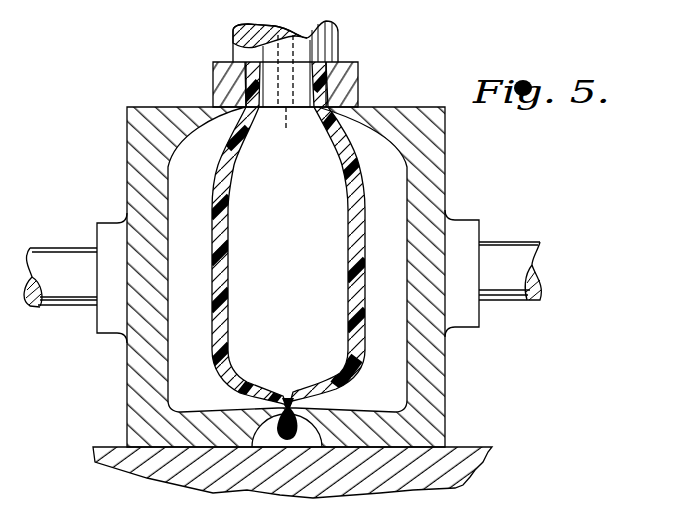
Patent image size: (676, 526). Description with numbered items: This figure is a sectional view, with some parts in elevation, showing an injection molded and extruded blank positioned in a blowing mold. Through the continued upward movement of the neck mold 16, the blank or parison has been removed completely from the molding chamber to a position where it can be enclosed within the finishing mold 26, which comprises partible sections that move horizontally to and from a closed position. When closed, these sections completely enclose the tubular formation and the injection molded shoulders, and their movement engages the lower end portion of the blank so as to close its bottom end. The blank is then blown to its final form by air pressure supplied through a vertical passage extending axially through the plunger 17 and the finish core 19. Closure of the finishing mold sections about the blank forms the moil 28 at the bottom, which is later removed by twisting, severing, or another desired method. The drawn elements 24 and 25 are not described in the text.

The neck mold 16 is at (358, 70).
The plunger 17 is at (327, 42).
The finish core 19 is at (268, 68).
The base plate 24 is at (292, 486).
The mold body 25 is at (430, 153).
The finishing mold 26 is at (285, 129).
The moil 28 is at (280, 420).